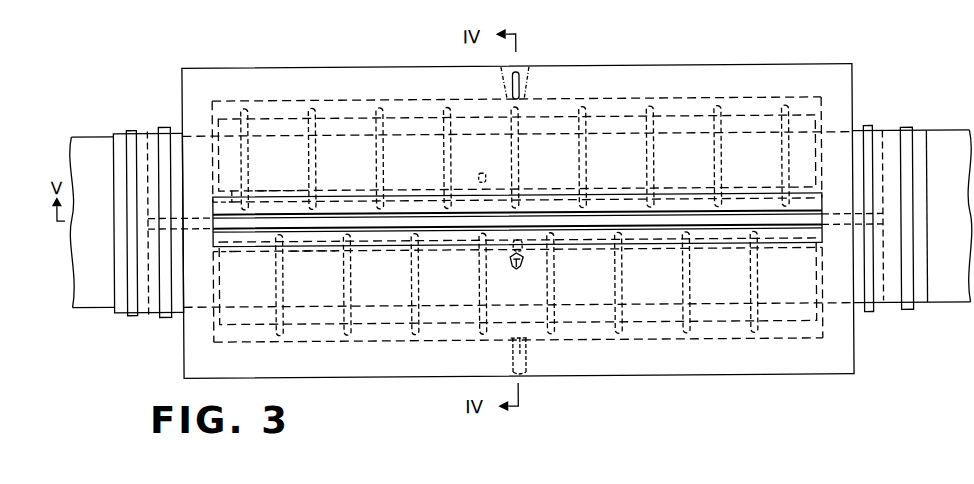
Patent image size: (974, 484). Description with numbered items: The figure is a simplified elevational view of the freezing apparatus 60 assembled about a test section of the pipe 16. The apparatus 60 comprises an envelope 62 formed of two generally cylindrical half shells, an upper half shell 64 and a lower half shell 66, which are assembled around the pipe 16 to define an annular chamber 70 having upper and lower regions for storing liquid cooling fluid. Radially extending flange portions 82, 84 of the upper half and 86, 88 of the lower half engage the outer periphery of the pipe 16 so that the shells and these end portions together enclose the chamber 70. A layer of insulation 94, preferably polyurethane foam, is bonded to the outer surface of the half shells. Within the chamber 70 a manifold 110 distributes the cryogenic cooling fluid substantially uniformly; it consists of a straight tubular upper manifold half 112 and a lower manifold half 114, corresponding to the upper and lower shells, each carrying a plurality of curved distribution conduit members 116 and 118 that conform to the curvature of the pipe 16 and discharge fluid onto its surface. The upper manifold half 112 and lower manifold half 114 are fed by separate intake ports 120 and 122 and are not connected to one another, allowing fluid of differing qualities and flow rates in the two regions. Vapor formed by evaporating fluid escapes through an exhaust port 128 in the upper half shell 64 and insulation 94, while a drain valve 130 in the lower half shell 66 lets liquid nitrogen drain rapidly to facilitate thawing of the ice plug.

The pipe 16 is at (97, 136).
The apparatus 60 is at (541, 194).
The envelope 62 is at (352, 98).
The upper half shell 64 is at (750, 100).
The lower half shell 66 is at (713, 342).
The annular chamber 70 is at (422, 113).
The radially extending flange portion 82 is at (222, 160).
The radially extending flange portion 84 is at (218, 285).
The radially extending flange portion 86 is at (817, 155).
The radially extending flange portion 88 is at (817, 280).
The insulation layer 94 is at (843, 83).
The manifold 110 is at (407, 203).
The upper manifold half 112 is at (272, 188).
The lower manifold half 114 is at (312, 253).
The distribution conduit members 116 is at (307, 147).
The distribution conduit members 118 is at (480, 280).
The intake port 120 is at (485, 192).
The intake port 122 is at (522, 253).
The exhaust port 128 is at (520, 89).
The drain valve 130 is at (523, 358).